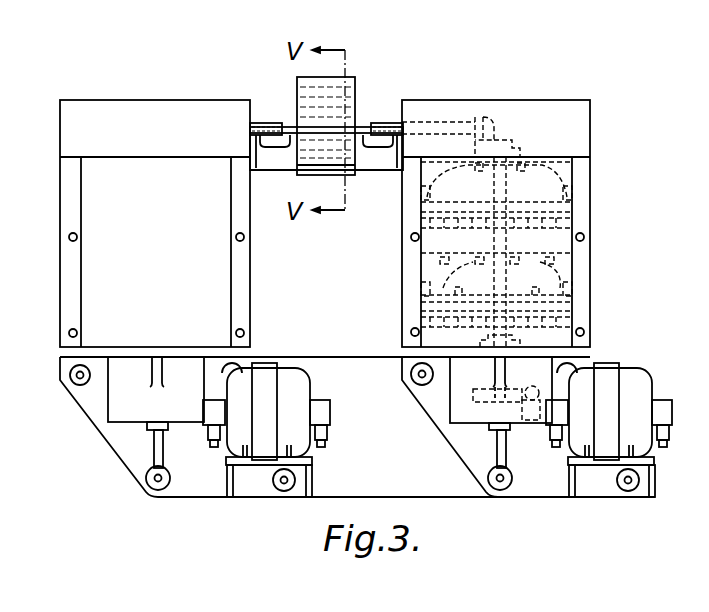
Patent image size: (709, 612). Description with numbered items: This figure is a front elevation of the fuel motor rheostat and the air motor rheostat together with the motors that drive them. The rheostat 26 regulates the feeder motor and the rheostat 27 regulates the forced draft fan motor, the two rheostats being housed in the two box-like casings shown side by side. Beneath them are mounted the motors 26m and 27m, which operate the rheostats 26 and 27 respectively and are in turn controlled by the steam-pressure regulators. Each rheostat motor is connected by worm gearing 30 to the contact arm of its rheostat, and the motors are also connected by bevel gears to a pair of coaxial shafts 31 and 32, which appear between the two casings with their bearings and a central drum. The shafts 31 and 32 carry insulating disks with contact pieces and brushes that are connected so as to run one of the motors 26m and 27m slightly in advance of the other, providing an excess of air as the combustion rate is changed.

The rheostat 26 is at (585, 182).
The rheostat 27 is at (155, 223).
The motor 26m is at (650, 366).
The motor 27m is at (297, 393).
The worm gearing 30 is at (488, 396).
The coaxial shaft 31 is at (379, 125).
The coaxial shaft 32 is at (278, 113).